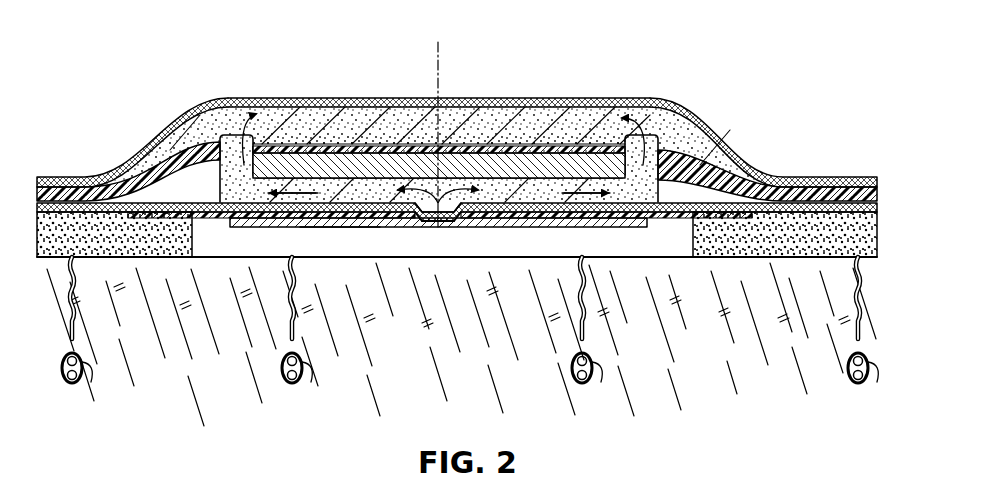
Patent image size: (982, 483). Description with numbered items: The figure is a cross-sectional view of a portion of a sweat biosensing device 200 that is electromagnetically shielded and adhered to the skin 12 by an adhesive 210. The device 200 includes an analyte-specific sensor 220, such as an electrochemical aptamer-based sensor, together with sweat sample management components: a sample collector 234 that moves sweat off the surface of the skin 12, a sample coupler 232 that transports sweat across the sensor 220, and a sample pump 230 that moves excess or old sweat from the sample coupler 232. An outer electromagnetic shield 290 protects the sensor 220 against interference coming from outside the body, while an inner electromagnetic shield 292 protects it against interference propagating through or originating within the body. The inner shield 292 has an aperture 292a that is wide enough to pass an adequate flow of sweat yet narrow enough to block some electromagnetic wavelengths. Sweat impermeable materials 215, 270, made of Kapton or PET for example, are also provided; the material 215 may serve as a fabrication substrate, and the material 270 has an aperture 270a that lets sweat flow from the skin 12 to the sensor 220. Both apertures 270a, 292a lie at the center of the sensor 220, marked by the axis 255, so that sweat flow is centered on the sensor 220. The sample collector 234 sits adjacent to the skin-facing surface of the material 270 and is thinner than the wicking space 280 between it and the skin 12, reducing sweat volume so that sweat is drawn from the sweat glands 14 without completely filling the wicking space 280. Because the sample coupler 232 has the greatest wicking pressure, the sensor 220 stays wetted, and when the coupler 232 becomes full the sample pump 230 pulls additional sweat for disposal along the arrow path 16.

The device 200 is at (130, 47).
The skin 12 is at (812, 335).
The sweat glands 14 is at (82, 380).
The arrow path 16 is at (641, 128).
The adhesive 210 is at (152, 258).
The sweat impermeable material 215 is at (322, 150).
The analyte-specific sensor 220 is at (280, 165).
The sample pump 230 is at (385, 122).
The sample coupler 232 is at (226, 150).
The sample collector 234 is at (338, 229).
The axis 255 is at (440, 58).
The sweat impermeable material 270 is at (215, 216).
The aperture 270a is at (447, 223).
The wicking space 280 is at (543, 228).
The outer electromagnetic shield 290 is at (552, 100).
The inner electromagnetic shield 292 is at (87, 186).
The aperture 292a is at (433, 222).